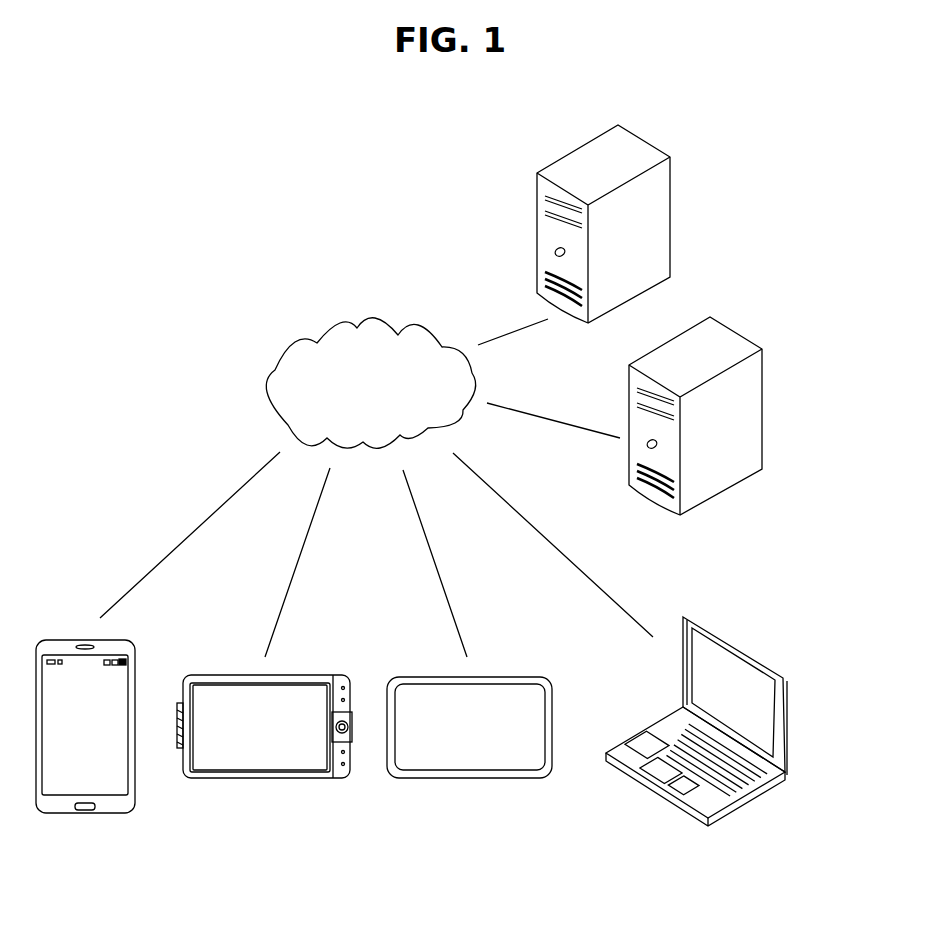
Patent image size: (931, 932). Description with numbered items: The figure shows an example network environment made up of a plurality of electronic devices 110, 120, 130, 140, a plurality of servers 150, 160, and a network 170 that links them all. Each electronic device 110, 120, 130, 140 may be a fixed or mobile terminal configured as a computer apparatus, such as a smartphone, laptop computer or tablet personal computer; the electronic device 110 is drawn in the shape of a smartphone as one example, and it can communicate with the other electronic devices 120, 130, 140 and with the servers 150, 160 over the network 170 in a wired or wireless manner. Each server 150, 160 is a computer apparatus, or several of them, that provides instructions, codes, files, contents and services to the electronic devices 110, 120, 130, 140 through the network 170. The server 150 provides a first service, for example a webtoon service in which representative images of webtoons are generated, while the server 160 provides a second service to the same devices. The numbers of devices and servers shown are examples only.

The electronic device (1) 110 is at (85, 813).
The electronic device 120 is at (265, 778).
The electronic device 130 is at (470, 778).
The electronic device 140 is at (786, 723).
The server 150 is at (763, 407).
The server 160 is at (670, 216).
The network 170 is at (373, 318).